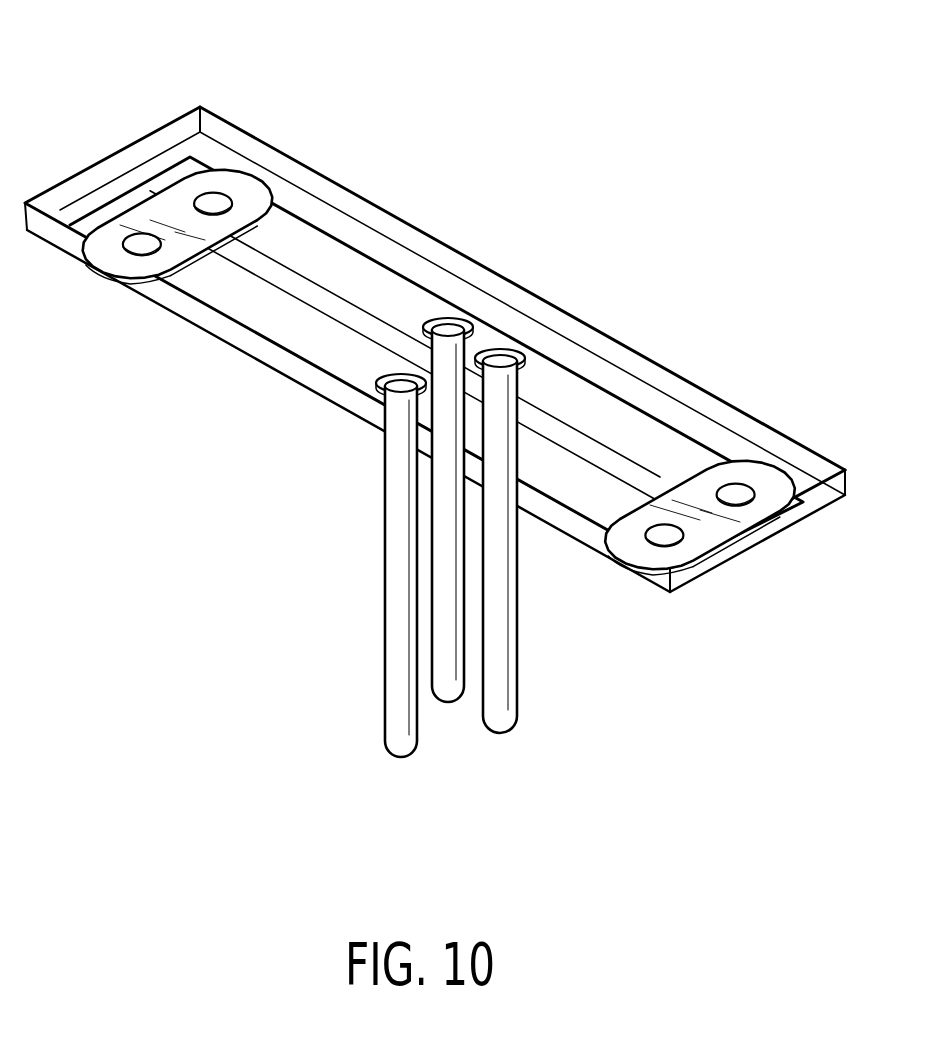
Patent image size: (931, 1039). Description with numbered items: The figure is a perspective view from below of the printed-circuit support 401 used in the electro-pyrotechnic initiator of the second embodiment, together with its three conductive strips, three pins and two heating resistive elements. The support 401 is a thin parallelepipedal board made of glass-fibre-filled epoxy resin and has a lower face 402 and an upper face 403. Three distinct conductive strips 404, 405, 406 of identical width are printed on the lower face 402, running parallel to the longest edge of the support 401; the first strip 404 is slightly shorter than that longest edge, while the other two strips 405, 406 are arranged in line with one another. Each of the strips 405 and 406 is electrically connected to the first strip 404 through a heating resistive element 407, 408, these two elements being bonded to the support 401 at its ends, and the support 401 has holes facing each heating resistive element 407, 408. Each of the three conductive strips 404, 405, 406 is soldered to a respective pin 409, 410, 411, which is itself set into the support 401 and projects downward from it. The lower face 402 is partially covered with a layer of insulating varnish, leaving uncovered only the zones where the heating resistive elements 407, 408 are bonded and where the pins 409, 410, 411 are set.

The printed-circuit support 401 is at (430, 236).
The lower face 402 is at (200, 328).
The upper face 403 is at (657, 357).
The first conductive strip 404 is at (308, 338).
The conductive strip 405 is at (575, 398).
The conductive strip 406 is at (325, 258).
The heating resistive element 407 is at (170, 197).
The heating resistive element 408 is at (732, 528).
The pin 409 is at (395, 703).
The pin 410 is at (502, 708).
The pin 411 is at (452, 690).